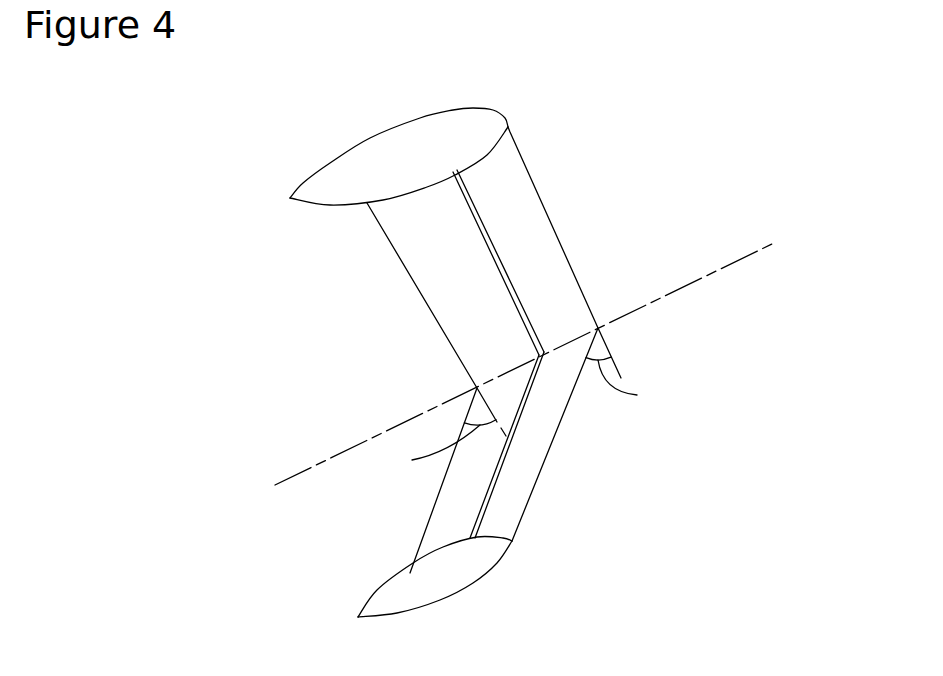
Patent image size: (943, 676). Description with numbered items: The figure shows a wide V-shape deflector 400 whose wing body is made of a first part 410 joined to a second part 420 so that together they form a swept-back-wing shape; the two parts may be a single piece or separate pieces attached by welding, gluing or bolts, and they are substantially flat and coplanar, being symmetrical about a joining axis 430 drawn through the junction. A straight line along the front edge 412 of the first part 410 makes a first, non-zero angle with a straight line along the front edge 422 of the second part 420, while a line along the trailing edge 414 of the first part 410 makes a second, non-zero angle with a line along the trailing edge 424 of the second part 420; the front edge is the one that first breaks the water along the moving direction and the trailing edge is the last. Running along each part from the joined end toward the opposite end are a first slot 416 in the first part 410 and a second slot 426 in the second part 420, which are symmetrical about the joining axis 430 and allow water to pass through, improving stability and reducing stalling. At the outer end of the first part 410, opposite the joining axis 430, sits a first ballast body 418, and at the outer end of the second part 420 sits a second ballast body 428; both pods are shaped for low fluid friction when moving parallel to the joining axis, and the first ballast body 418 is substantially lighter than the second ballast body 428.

The deflector 400 is at (664, 172).
The first part 410 is at (466, 269).
The front edge of the first part 412 is at (532, 175).
The trailing edge of the first part 414 is at (400, 265).
The first slot 416 is at (500, 268).
The first ballast body 418 is at (350, 168).
The second part 420 is at (497, 450).
The front edge of the second part 422 is at (565, 417).
The trailing edge of the second part 424 is at (440, 483).
The second slot 426 is at (490, 502).
The second ballast body 428 is at (462, 597).
The joining axis 430 is at (683, 288).